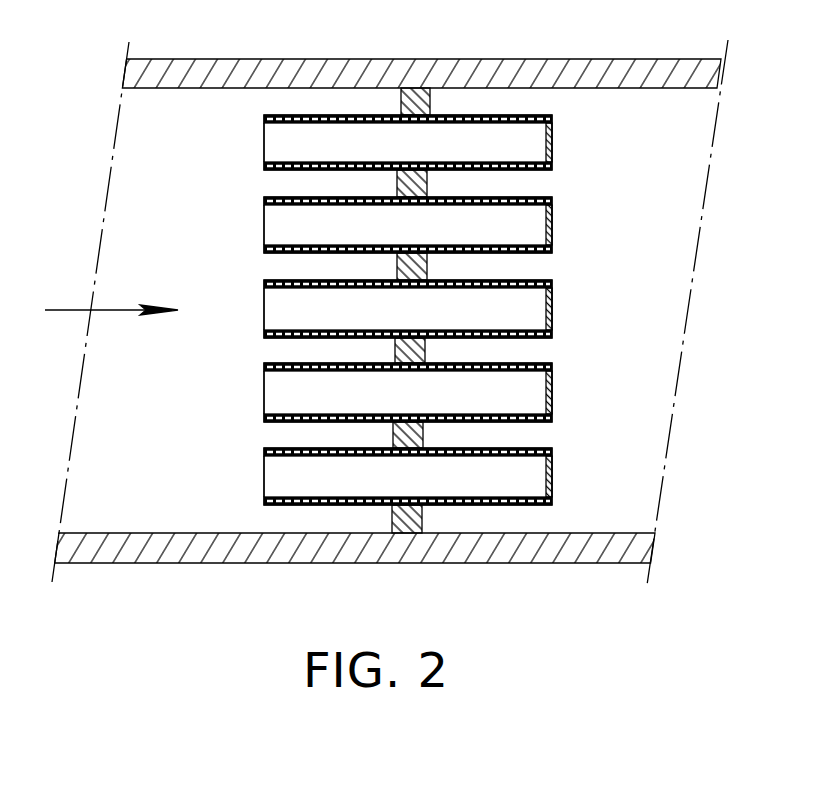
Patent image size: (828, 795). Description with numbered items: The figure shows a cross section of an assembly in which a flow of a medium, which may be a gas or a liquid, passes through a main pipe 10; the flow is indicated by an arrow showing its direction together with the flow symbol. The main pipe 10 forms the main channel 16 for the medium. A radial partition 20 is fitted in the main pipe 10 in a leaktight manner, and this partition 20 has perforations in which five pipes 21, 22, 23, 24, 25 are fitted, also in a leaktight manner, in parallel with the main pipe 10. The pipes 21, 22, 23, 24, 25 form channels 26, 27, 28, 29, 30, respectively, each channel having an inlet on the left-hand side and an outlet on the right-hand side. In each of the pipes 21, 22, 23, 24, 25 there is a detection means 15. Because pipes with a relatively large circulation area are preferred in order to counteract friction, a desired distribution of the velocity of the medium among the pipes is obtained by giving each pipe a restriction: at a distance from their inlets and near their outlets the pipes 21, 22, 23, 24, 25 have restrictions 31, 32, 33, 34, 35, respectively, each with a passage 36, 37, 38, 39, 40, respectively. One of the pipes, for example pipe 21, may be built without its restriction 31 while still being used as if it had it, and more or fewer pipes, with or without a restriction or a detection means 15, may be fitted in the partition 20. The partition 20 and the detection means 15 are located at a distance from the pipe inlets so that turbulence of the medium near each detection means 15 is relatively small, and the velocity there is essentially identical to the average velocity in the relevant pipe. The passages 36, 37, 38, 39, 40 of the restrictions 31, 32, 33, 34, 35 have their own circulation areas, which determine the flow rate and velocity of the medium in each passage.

The main pipe 10 is at (557, 58).
The detection means 15 is at (408, 143).
The main channel 16 is at (700, 130).
The partition 20 is at (435, 98).
The pipe 21 is at (270, 118).
The pipe 22 is at (270, 200).
The pipe 23 is at (270, 282).
The pipe 24 is at (268, 367).
The pipe 25 is at (265, 452).
The channel 26 is at (285, 142).
The channel 27 is at (283, 222).
The channel 28 is at (285, 310).
The channel 29 is at (285, 395).
The channel 30 is at (278, 481).
The restriction 31 is at (558, 126).
The restriction 32 is at (558, 206).
The restriction 33 is at (555, 290).
The restriction 34 is at (555, 372).
The restriction 35 is at (553, 460).
The passage 36 is at (560, 143).
The passage 37 is at (553, 225).
The passage 38 is at (553, 306).
The passage 39 is at (555, 388).
The passage 40 is at (553, 477).